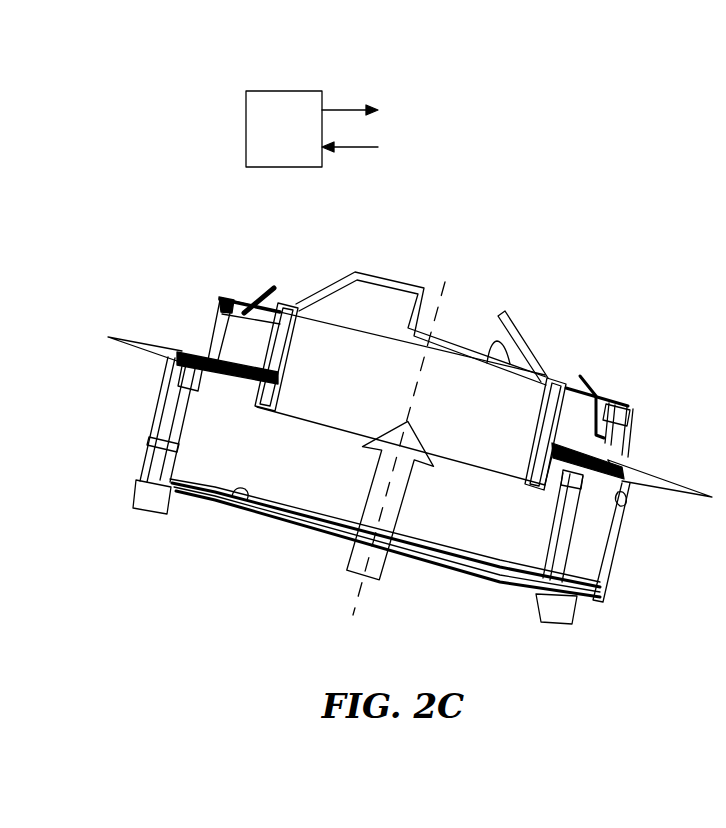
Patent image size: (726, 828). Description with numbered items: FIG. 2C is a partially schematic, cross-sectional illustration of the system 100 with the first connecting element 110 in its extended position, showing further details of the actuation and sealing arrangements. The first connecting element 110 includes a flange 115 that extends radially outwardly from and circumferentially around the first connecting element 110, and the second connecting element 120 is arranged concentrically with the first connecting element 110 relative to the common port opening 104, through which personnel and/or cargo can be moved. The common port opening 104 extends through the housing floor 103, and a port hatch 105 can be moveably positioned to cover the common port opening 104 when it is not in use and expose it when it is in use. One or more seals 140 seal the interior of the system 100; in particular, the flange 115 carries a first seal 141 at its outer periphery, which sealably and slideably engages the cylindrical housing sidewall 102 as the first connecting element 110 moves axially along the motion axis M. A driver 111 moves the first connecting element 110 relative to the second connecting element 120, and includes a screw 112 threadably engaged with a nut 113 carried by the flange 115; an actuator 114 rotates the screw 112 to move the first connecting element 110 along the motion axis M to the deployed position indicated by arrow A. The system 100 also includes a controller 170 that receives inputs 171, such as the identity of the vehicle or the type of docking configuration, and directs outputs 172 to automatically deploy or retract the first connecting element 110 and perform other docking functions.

The system 100 is at (149, 218).
The housing sidewall 102 is at (617, 572).
The housing floor 103 is at (242, 502).
The common port opening 104 is at (438, 583).
The port hatch 105 is at (328, 535).
The first connecting element 110 is at (330, 292).
The driver 111 is at (118, 372).
The screw 112 is at (150, 444).
The nut 113 is at (203, 385).
The actuator 114 is at (150, 510).
The flange 115 is at (560, 477).
The second connecting element 120 is at (586, 378).
The seals 140 is at (690, 632).
The first seal 141 is at (632, 510).
The controller 170 is at (305, 91).
The inputs 171 is at (352, 150).
The outputs 172 is at (348, 108).